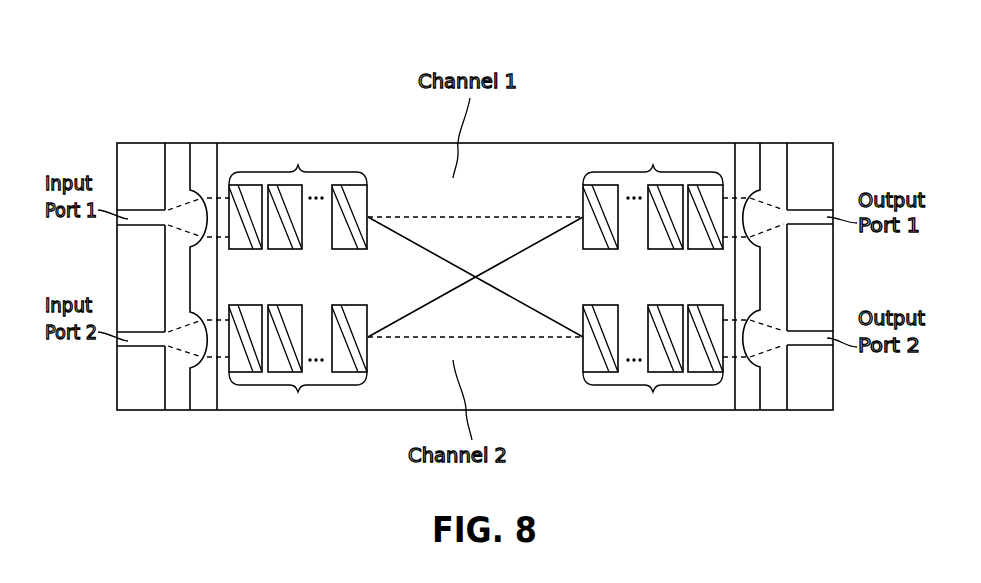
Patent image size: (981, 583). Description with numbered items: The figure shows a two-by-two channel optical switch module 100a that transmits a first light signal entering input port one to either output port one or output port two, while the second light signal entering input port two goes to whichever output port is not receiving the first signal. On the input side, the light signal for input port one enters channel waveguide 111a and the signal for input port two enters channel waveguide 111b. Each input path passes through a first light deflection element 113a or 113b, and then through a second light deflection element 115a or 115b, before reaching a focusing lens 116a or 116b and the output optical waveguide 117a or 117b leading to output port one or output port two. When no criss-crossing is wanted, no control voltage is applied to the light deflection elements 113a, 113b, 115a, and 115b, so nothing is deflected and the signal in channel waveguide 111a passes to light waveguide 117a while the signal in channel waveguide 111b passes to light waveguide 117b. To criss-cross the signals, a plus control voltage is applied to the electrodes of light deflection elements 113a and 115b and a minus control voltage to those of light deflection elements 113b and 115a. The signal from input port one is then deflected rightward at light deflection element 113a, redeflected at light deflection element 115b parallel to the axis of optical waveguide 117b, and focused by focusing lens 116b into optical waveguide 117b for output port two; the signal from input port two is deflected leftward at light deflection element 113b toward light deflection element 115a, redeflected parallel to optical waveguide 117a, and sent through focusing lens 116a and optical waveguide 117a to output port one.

The optical switch module 100a is at (675, 75).
The channel waveguide 111a is at (140, 207).
The channel waveguide 111b is at (142, 349).
The light deflection element 113a is at (298, 165).
The light deflection element 113b is at (298, 392).
The light deflection element 115a is at (653, 165).
The light deflection element 115b is at (653, 392).
The focusing lens 116a is at (770, 202).
The focusing lens 116b is at (770, 338).
The optical waveguide 117a is at (807, 205).
The optical waveguide 117b is at (808, 348).